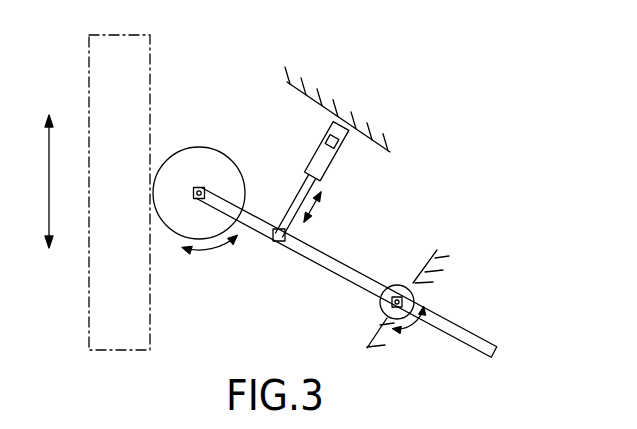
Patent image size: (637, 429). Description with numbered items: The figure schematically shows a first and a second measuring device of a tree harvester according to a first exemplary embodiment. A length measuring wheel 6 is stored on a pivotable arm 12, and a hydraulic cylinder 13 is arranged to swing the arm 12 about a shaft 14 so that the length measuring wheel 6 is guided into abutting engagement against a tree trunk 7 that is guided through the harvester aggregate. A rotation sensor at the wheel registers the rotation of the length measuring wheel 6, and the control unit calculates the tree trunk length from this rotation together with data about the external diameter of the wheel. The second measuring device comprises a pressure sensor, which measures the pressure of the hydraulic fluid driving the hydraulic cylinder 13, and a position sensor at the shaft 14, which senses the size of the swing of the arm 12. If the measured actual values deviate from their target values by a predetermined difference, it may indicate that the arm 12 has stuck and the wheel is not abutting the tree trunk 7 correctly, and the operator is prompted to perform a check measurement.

The tree trunk 7 is at (97, 67).
The length measuring wheel 6 is at (200, 160).
The pivotable arm 12 is at (313, 257).
The hydraulic cylinder 13 is at (326, 168).
The shaft 14 is at (394, 330).